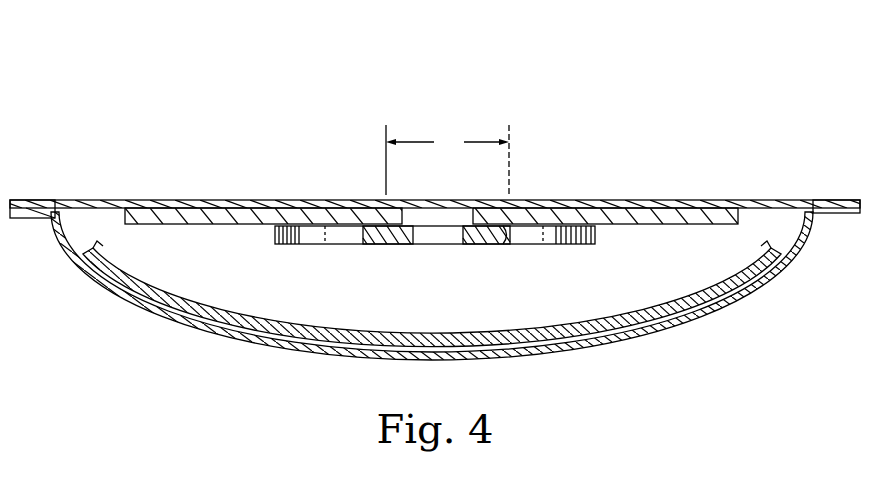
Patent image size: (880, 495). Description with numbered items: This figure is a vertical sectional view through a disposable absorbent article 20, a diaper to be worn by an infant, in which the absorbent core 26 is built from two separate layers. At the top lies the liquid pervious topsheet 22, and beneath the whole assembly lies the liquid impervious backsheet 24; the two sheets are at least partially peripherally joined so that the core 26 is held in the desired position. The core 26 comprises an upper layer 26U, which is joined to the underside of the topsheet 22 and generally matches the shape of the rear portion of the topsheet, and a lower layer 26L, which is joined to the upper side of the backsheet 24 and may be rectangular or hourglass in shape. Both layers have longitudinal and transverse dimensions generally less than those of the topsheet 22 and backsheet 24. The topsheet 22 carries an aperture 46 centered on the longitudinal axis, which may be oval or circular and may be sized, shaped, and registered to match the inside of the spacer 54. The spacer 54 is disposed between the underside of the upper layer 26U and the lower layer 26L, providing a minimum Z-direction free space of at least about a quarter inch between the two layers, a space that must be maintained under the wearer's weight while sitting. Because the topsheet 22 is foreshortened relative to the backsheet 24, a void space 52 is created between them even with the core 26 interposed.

The disposable absorbent article 20 is at (205, 185).
The liquid pervious topsheet 22 is at (148, 200).
The liquid impervious backsheet 24 is at (167, 316).
The absorbent core 26 is at (660, 226).
The upper layer of the core 26U is at (641, 204).
The lower layer of the core 26L is at (400, 345).
The aperture 46 is at (447, 160).
The void space 52 is at (469, 265).
The spacer 54 is at (518, 245).